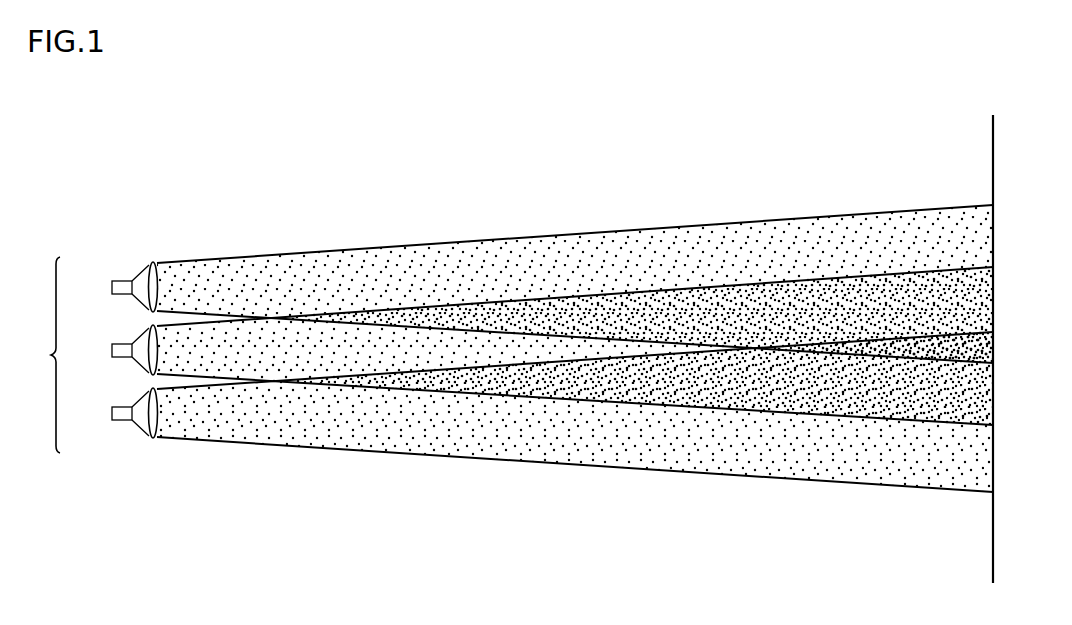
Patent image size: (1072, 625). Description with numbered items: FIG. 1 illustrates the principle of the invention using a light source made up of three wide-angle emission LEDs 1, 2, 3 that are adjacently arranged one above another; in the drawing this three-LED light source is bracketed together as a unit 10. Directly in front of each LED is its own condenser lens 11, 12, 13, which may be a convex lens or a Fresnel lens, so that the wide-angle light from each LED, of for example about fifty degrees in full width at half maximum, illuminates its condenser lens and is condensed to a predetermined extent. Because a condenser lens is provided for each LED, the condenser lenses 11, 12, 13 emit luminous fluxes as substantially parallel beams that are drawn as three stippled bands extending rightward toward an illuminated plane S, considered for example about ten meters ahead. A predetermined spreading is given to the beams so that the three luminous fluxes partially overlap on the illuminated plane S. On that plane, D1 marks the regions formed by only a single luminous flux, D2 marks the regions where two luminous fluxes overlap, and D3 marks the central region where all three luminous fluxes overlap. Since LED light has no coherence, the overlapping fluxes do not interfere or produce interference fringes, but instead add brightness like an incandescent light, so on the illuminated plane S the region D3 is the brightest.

The LED 1 is at (112, 288).
The LED 2 is at (112, 350).
The LED 3 is at (112, 413).
The light source unit 10 is at (46, 368).
The condenser lens 11 is at (152, 263).
The condenser lens 12 is at (148, 370).
The condenser lens 13 is at (153, 437).
The illuminated plane S is at (995, 137).
The region formed of a single luminous flux D1 is at (533, 250).
The region in which two luminous fluxes overlap D2 is at (742, 305).
The region in which three luminous fluxes overlap D3 is at (985, 345).